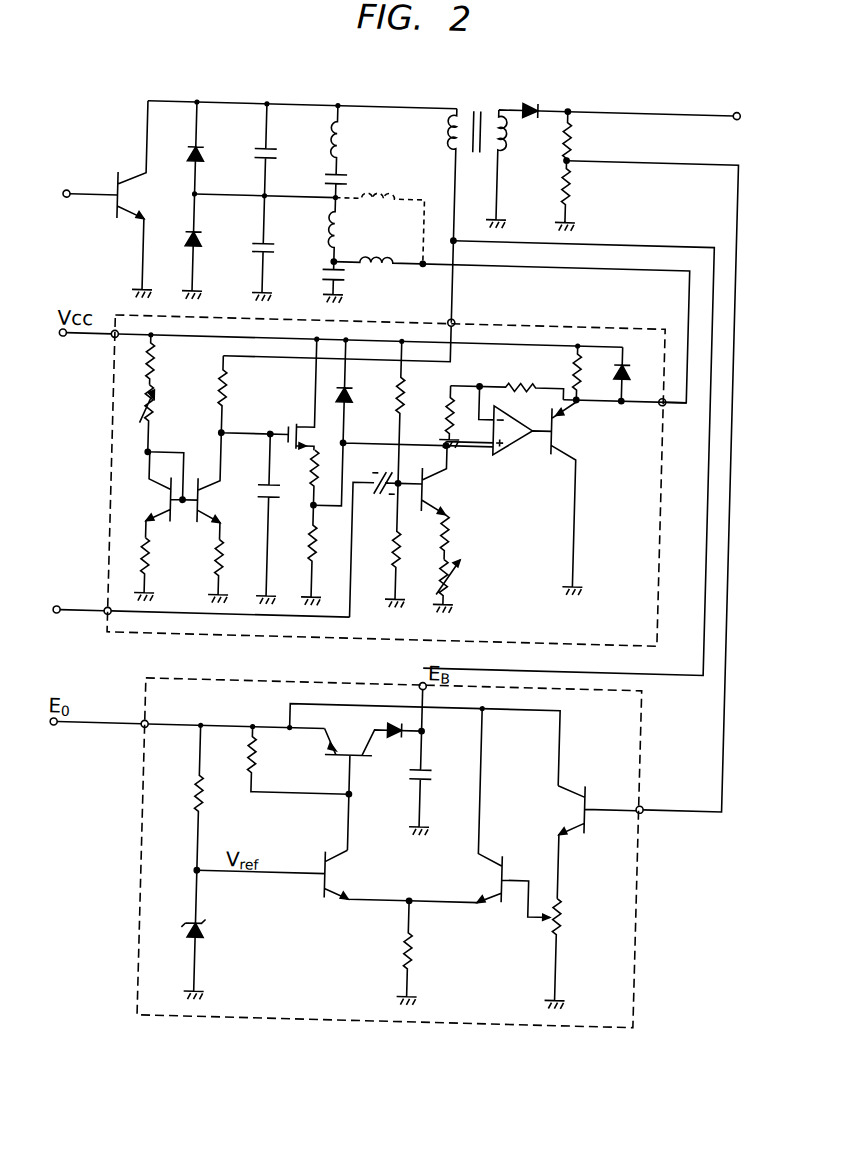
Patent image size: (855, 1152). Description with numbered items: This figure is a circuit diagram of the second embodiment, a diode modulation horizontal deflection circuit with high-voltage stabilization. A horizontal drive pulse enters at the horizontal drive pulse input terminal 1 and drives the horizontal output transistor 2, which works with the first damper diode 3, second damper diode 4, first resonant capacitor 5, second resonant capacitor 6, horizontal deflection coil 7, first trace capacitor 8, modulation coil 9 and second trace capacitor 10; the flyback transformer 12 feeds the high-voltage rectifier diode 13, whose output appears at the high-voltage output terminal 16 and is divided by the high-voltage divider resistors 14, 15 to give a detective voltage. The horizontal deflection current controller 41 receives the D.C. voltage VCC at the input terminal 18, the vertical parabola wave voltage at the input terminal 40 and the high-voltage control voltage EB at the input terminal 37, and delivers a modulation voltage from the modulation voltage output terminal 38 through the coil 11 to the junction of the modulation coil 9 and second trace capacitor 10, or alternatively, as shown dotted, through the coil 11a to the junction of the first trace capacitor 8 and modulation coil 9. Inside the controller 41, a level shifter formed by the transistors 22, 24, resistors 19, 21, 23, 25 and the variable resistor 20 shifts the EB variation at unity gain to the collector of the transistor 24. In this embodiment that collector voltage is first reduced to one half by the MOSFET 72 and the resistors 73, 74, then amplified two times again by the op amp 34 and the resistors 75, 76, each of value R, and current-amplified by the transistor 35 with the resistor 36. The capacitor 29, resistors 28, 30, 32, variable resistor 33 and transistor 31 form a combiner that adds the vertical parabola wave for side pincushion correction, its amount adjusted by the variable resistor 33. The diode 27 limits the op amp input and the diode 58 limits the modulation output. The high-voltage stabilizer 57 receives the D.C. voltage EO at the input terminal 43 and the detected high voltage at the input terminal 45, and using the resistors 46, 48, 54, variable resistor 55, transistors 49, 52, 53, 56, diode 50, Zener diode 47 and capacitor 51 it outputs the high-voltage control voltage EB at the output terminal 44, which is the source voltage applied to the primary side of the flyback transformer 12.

The horizontal drive pulse input terminal 1 is at (60, 207).
The horizontal output transistor 2 is at (122, 230).
The first damper diode 3 is at (175, 153).
The second damper diode 4 is at (182, 254).
The first resonant capacitor 5 is at (248, 145).
The second resonant capacitor 6 is at (250, 260).
The horizontal deflection coil 7 is at (335, 136).
The first trace capacitor 8 is at (310, 177).
The modulation coil 9 is at (332, 222).
The second trace capacitor 10 is at (336, 280).
The coil 11 is at (388, 270).
The coil 11a is at (390, 196).
The flyback transformer 12 is at (469, 104).
The high-voltage rectifier diode 13 is at (518, 100).
The high-voltage divider resistor 14 is at (562, 133).
The high-voltage divider resistor 15 is at (562, 190).
The high-voltage output terminal 16 is at (724, 104).
The D.C. voltage VCC input terminal 18 is at (104, 346).
The resistor 19 is at (150, 368).
The variable resistor 20 is at (158, 412).
The resistor 21 is at (224, 386).
The transistor 22 is at (152, 506).
The resistor 23 is at (152, 558).
The transistor 24 is at (222, 516).
The resistor 25 is at (226, 558).
The diode 27 is at (350, 392).
The resistor 28 is at (402, 382).
The capacitor 29 is at (373, 500).
The resistor 30 is at (386, 550).
The transistor 31 is at (449, 488).
The resistor 32 is at (452, 526).
The variable resistor 33 is at (453, 572).
The op amp 34 is at (514, 452).
The transistor 35 is at (582, 438).
The resistor 36 is at (565, 361).
The high-voltage control voltage EB input terminal 37 is at (448, 320).
The modulation voltage output terminal 38 is at (660, 400).
The vertical parabola wave voltage input terminal 40 is at (105, 616).
The horizontal deflection current controller 41 is at (142, 640).
The D.C. voltage EO input terminal 43 is at (145, 734).
The high-voltage control voltage EB output terminal 44 is at (421, 684).
The high-voltage detective voltage input terminal 45 is at (648, 800).
The resistor 46 is at (198, 793).
The Zener diode 47 is at (214, 936).
The resistor 48 is at (240, 748).
The transistor 49 is at (358, 760).
The diode 50 is at (384, 728).
The capacitor 51 is at (438, 766).
The transistor 52 is at (345, 874).
The transistor 53 is at (494, 876).
The resistor 54 is at (424, 938).
The variable resistor 55 is at (572, 915).
The transistor 56 is at (562, 802).
The high-voltage stabilizer 57 is at (148, 908).
The diode 58 is at (625, 366).
The MOSFET 72 is at (293, 426).
The resistor 73 is at (294, 498).
The resistor 74 is at (308, 551).
The resistor 75 is at (434, 409).
The resistor 76 is at (504, 380).